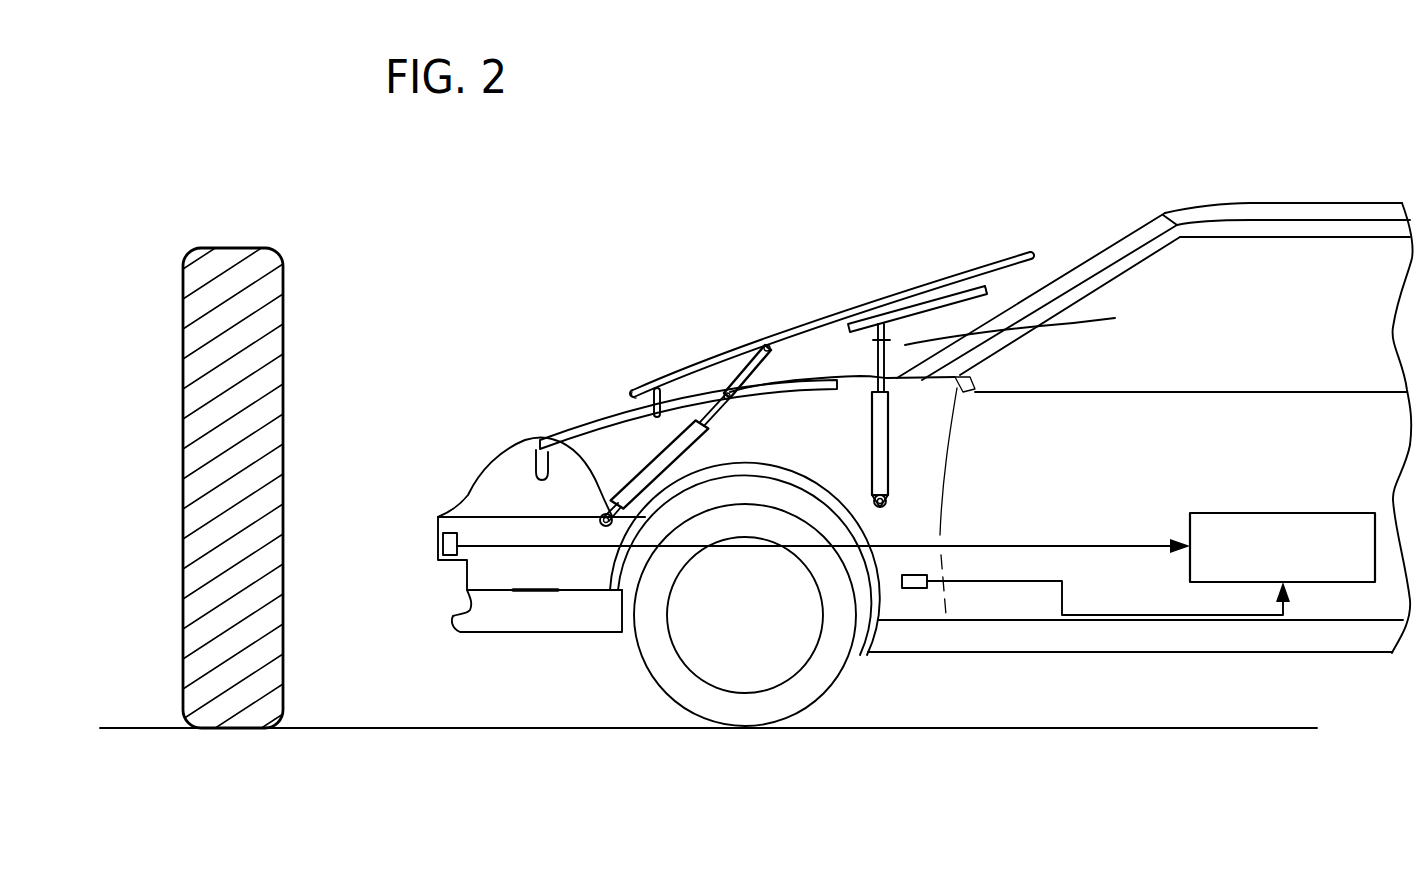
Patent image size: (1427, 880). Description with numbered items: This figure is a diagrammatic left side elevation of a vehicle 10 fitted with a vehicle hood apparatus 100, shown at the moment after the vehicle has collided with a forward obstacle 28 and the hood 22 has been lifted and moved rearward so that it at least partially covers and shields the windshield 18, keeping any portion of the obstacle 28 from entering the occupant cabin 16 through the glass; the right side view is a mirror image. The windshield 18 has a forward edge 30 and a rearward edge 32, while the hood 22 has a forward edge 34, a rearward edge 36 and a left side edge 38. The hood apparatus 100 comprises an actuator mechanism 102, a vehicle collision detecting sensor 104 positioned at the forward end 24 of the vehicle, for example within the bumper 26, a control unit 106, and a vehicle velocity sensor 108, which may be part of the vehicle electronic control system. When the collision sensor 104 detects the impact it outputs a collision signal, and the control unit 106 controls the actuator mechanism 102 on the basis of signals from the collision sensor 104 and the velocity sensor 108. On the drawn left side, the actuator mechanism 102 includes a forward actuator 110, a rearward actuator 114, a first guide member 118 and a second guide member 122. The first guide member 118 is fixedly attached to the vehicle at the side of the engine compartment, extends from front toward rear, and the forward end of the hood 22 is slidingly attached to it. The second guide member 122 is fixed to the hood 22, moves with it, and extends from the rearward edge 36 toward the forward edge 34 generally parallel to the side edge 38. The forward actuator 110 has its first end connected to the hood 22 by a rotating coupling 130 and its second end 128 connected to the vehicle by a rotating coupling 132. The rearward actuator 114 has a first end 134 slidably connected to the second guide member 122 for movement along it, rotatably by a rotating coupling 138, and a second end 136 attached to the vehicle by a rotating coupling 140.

The vehicle 10 is at (1327, 202).
The occupant cabin 16 is at (1243, 258).
The windshield 18 is at (1133, 234).
The hood 22 is at (823, 320).
The forward end 24 is at (438, 516).
The bumper 26 is at (537, 587).
The forward obstacle 28 is at (232, 247).
The forward edge of the windshield 30 is at (648, 388).
The rearward edge of the windshield 32 is at (1177, 211).
The forward edge of the hood 34 is at (637, 396).
The rearward edge of the hood 36 is at (1032, 256).
The left side edge of the hood 38 is at (910, 308).
The vehicle hood apparatus 100 is at (773, 466).
The actuator mechanism 102 is at (660, 499).
The vehicle collision detecting sensor 104 is at (443, 548).
The control unit 106 is at (1340, 583).
The vehicle velocity sensor 108 is at (913, 588).
The left forward actuator 110 is at (640, 487).
The left rearward actuator 114 is at (947, 466).
The left first guide member 118 is at (747, 402).
The left second guide member 122 is at (966, 291).
The second end of the forward actuator 128 is at (547, 445).
The rotating coupling 130 is at (768, 347).
The rotating coupling 132 is at (608, 527).
The first end of the rearward actuator 134 is at (1042, 320).
The second end of the rearward actuator 136 is at (725, 393).
The rotating coupling 138 is at (885, 316).
The rotating coupling 140 is at (880, 508).